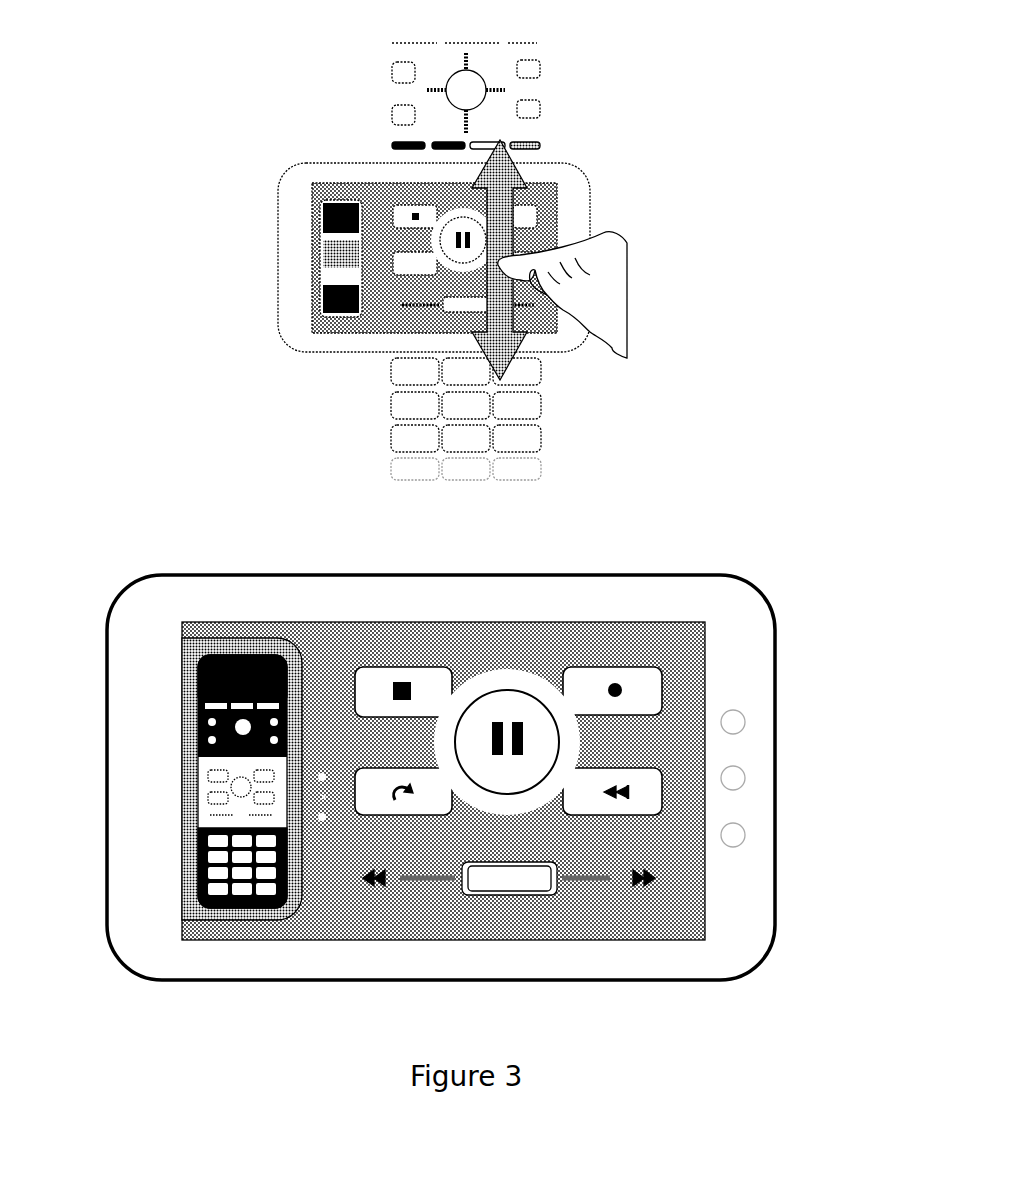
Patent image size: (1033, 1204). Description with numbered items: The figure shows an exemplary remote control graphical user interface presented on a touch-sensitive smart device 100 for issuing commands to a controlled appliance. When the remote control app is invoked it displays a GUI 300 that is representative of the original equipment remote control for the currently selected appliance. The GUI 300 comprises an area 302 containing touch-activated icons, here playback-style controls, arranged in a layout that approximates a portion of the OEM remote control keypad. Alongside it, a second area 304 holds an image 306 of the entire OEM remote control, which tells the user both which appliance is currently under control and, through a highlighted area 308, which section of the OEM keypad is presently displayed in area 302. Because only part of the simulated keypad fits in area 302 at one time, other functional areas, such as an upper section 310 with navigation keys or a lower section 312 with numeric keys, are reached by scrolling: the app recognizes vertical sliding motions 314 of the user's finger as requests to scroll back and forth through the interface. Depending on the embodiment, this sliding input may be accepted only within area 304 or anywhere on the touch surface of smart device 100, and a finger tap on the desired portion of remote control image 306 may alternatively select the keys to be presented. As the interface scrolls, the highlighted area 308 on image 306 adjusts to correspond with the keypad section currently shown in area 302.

The smart device 100 is at (235, 983).
The GUI 300 is at (672, 940).
The area containing touch-activated icons 302 is at (470, 627).
The second area 304 is at (195, 656).
The image representative of the OEM remote control 306 is at (195, 697).
The highlighted area 308 is at (190, 810).
The upper section of the simulated OEM keypad 310 is at (495, 72).
The lower section of the simulated OEM keypad 312 is at (497, 457).
The vertical sliding motions 314 is at (503, 220).